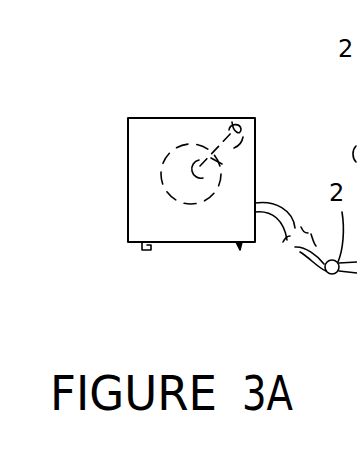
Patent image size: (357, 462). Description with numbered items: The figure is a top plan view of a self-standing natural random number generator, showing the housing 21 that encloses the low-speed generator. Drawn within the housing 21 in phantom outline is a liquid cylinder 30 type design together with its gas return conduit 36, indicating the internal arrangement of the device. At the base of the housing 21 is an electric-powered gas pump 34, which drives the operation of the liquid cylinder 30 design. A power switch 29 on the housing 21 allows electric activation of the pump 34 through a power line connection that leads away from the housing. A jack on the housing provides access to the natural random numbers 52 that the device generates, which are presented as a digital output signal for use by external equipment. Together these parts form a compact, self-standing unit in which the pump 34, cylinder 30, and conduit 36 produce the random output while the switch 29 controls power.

The housing 21 is at (143, 200).
The liquid cylinder 30 is at (164, 162).
The gas return conduit 36 is at (232, 122).
The natural random numbers 52 is at (148, 256).
The electric-powered gas pump 34 is at (158, 225).
The power switch 29 is at (240, 258).